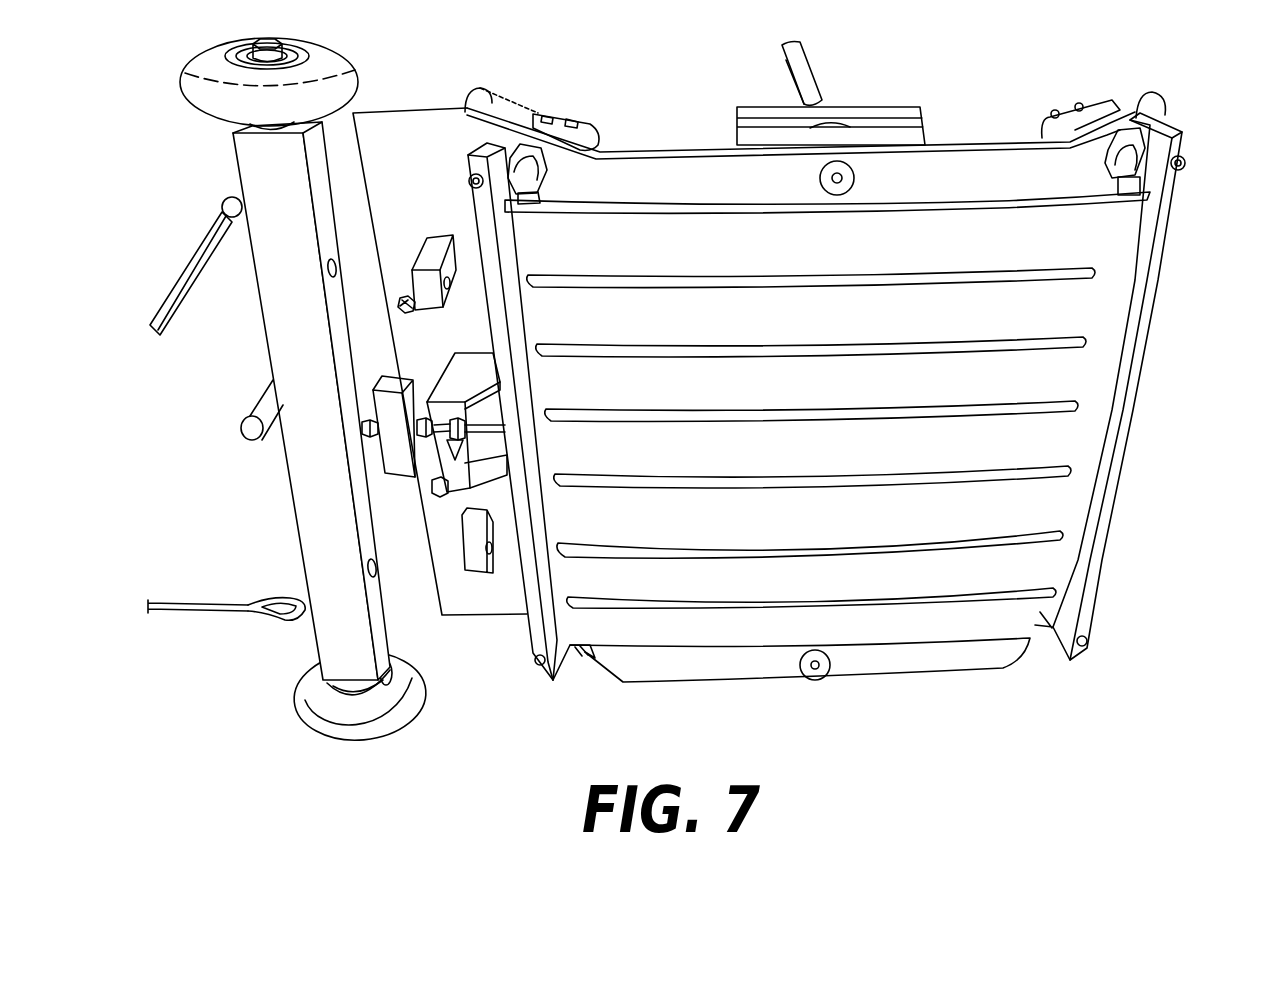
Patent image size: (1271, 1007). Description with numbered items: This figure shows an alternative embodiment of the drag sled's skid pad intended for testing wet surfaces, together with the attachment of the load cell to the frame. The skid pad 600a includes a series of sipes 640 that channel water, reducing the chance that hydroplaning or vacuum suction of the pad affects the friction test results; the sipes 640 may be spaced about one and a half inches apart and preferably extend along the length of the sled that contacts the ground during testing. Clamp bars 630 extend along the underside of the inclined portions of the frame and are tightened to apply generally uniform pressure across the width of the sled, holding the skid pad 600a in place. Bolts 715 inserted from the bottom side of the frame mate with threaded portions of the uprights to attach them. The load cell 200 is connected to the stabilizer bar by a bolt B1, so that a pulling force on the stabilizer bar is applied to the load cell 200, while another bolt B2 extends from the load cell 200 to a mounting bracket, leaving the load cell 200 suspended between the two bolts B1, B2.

The load cell 200 is at (403, 463).
The clamp bars 630 is at (486, 143).
The sipes 640 is at (1095, 272).
The bolt 715 is at (851, 170).
The skid pad 600a is at (1045, 610).
The bolt B1 is at (363, 428).
The bolt B2 is at (423, 440).